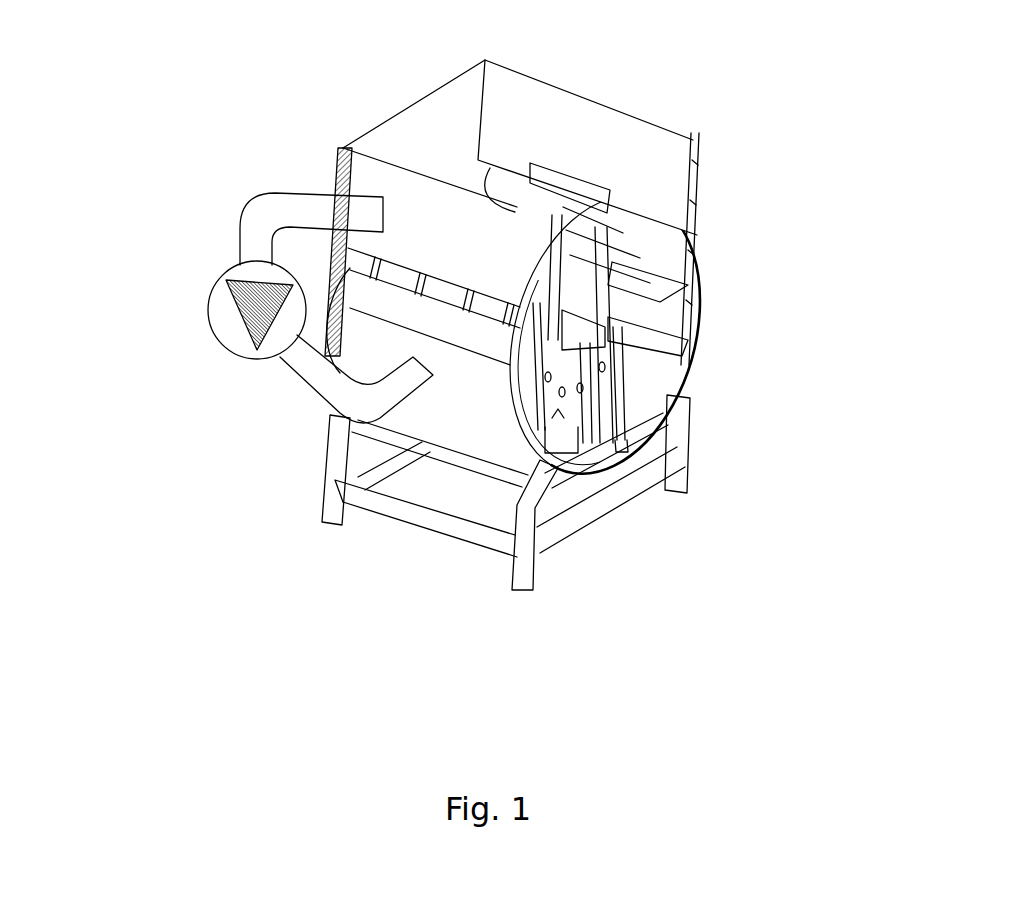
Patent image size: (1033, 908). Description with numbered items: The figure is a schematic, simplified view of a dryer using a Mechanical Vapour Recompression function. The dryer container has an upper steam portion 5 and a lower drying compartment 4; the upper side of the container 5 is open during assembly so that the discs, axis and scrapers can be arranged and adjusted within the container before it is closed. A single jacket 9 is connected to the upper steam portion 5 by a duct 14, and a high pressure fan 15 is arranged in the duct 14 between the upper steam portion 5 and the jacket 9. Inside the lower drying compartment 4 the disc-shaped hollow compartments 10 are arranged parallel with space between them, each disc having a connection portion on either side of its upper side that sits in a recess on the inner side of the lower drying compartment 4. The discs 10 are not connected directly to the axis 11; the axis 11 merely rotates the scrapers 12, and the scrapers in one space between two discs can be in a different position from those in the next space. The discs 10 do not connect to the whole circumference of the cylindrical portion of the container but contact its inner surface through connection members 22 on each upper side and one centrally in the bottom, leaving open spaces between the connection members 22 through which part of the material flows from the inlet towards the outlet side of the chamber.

The lower drying compartment 4 is at (690, 342).
The upper steam portion 5 is at (425, 132).
The jacket 9 is at (497, 440).
The disc-shaped hollow compartments 10 is at (553, 415).
The axis 11 is at (653, 347).
The scrapers 12 is at (621, 460).
The duct 14 is at (258, 220).
The high pressure fan 15 is at (208, 325).
The connection members 22 is at (660, 243).